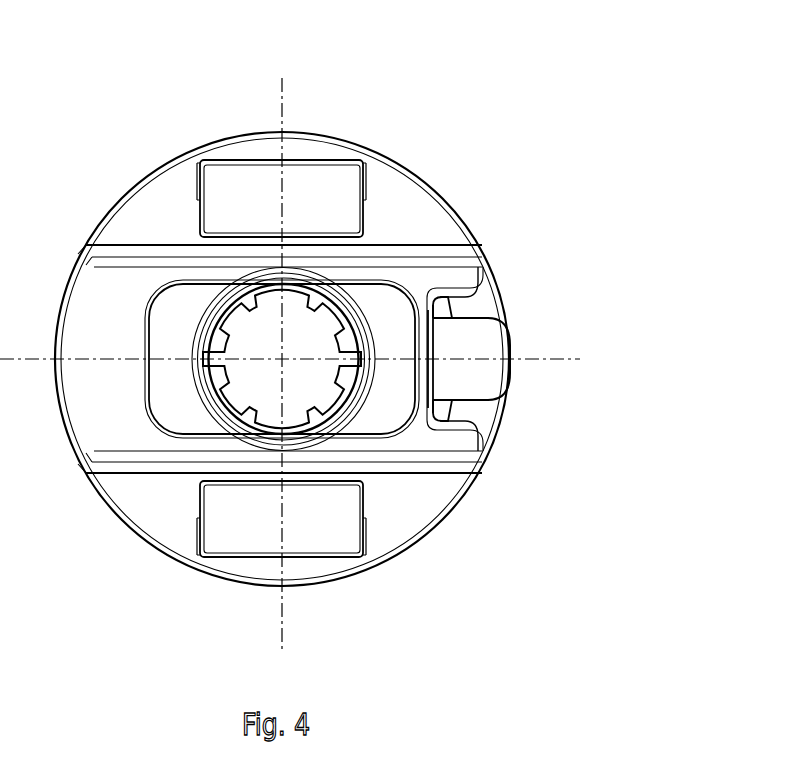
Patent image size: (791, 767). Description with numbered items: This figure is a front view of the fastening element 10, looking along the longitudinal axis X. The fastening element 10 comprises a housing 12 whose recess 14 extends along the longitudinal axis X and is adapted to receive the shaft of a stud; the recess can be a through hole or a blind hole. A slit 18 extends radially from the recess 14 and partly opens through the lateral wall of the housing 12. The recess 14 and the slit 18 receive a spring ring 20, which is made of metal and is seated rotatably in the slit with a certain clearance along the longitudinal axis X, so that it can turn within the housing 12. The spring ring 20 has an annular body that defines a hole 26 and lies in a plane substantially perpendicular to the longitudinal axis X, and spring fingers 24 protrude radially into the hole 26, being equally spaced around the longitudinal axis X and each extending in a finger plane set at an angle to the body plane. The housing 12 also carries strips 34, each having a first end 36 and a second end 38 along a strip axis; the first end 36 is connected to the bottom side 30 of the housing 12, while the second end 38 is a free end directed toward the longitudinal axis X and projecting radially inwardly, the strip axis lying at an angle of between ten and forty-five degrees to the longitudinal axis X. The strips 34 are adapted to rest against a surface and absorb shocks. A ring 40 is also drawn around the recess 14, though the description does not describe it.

The fastening element 10 is at (601, 160).
The housing 12 is at (442, 186).
The recess 14 is at (258, 360).
The slit 18 is at (467, 310).
The spring ring 20 is at (230, 338).
The spring fingers 24 is at (340, 397).
The hole 26 is at (282, 359).
The bottom side 30 is at (176, 190).
The strips 34 is at (261, 222).
The first end 36 is at (281, 164).
The second end 38 is at (347, 246).
The ring 40 is at (213, 407).
The longitudinal axis X is at (282, 362).